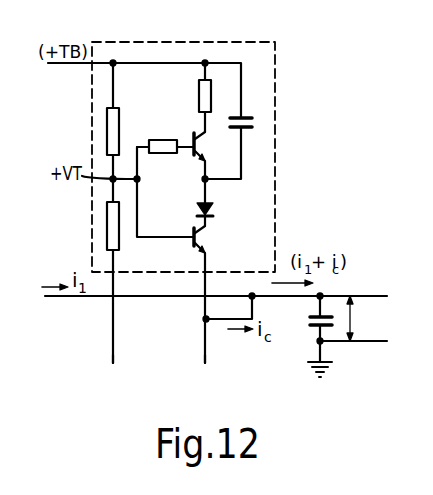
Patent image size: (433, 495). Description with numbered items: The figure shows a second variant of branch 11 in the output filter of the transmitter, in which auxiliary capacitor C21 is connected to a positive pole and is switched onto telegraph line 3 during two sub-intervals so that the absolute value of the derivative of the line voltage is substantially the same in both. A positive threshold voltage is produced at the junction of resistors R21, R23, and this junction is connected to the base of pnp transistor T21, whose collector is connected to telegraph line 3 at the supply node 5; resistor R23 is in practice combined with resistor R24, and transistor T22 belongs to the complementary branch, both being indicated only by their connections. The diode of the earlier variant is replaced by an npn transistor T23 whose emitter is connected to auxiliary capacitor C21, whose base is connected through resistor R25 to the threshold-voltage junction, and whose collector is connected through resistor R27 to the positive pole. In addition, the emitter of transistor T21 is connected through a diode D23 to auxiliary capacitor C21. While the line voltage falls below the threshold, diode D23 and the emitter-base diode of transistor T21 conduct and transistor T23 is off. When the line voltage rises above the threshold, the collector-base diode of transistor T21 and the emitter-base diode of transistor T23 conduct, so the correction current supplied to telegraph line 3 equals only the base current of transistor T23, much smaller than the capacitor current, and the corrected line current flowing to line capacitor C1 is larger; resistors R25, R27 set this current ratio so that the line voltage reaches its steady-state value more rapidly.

The branch 11 is at (278, 112).
The supply line (node 5) 5 is at (214, 309).
The telegraph line 3 is at (361, 318).
The resistor R21 is at (121, 122).
The resistor R23 is at (120, 231).
The resistor R25 is at (160, 140).
The resistor R27 is at (198, 103).
The pnp transistor T21 is at (192, 233).
The npn transistor T23 is at (196, 151).
The diode D23 is at (212, 211).
The auxiliary capacitor C21 is at (243, 114).
The capacitor C1 is at (316, 330).
The resistor R24 is at (115, 378).
The npn transistor T22 is at (210, 378).